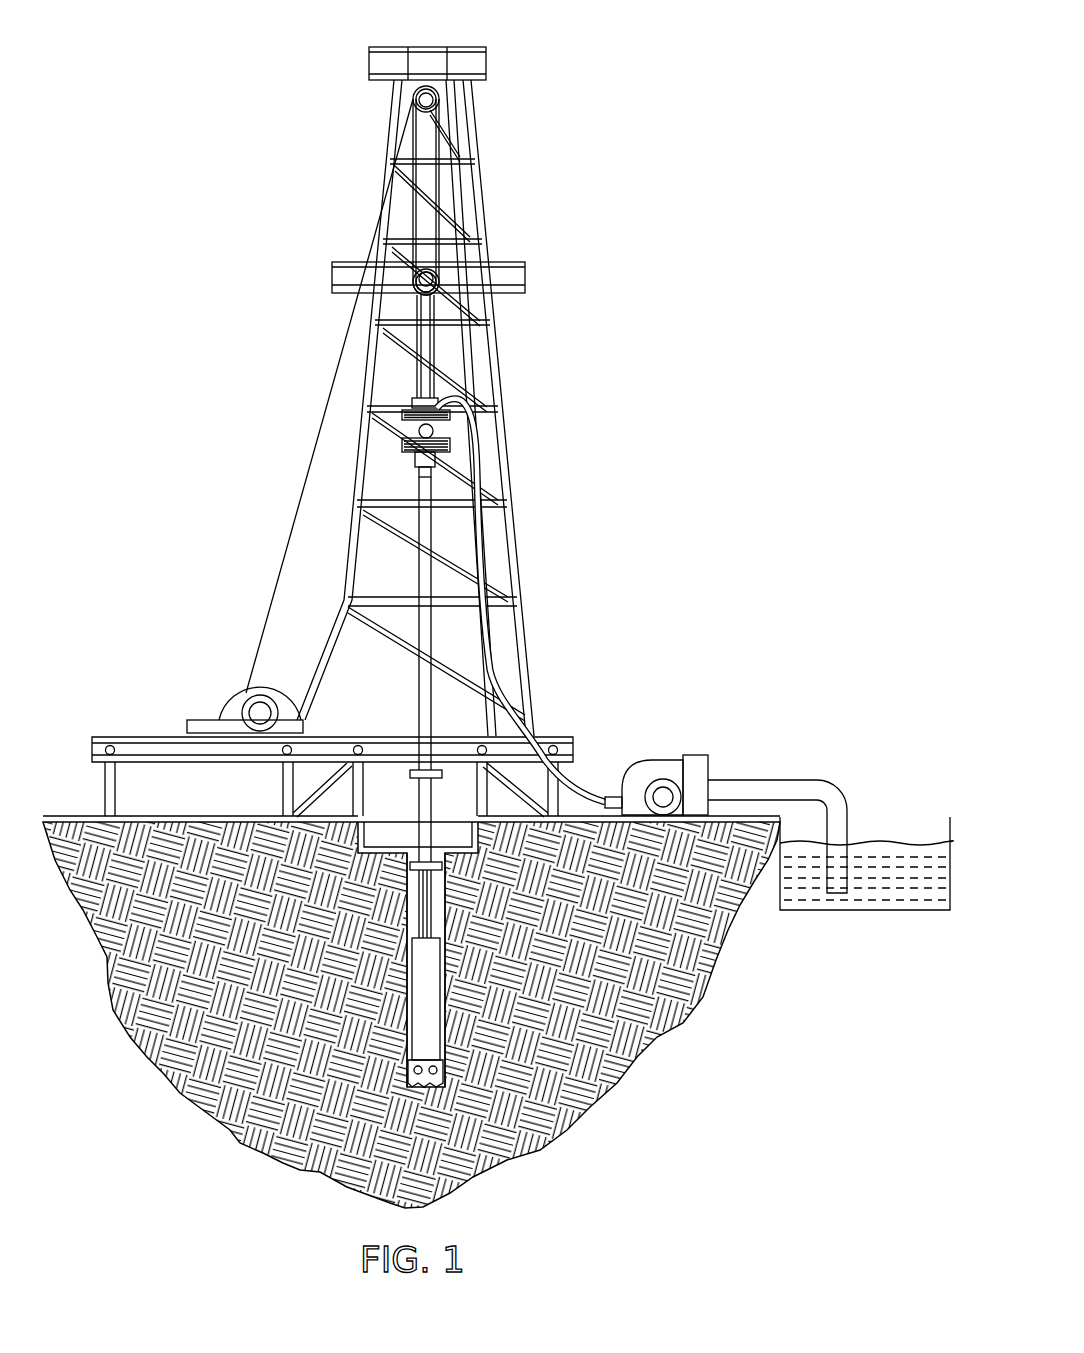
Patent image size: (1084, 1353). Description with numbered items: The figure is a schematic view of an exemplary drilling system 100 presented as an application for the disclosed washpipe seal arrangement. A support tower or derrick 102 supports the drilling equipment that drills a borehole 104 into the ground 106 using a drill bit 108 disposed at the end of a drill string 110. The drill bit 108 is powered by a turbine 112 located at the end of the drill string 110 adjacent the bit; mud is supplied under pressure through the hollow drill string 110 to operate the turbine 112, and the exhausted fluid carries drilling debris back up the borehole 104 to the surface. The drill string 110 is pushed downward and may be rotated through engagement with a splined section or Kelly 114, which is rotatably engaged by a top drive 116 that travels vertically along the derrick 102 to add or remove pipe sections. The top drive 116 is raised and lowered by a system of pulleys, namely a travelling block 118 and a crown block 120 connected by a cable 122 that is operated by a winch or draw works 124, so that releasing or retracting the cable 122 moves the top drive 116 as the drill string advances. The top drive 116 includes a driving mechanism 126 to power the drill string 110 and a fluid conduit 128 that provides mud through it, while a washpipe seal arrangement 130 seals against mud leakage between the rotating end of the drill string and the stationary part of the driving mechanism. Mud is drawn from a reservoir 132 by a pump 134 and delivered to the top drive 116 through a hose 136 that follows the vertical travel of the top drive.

The drilling system 100 is at (697, 85).
The derrick 102 is at (478, 170).
The borehole 104 is at (403, 840).
The ground 106 is at (167, 1068).
The drill bit 108 is at (450, 1062).
The drill string 110 is at (430, 818).
The turbine 112 is at (433, 963).
The Kelly 114 is at (428, 553).
The top drive 116 is at (508, 432).
The travelling block 118 is at (440, 284).
The crown block 120 is at (440, 91).
The cable 122 is at (310, 462).
The draw works 124 is at (237, 690).
The driving mechanism 126 is at (437, 400).
The fluid conduit 128 is at (401, 445).
The washpipe seal arrangement 130 is at (436, 470).
The reservoir 132 is at (924, 826).
The pump 134 is at (665, 755).
The hose 136 is at (493, 643).